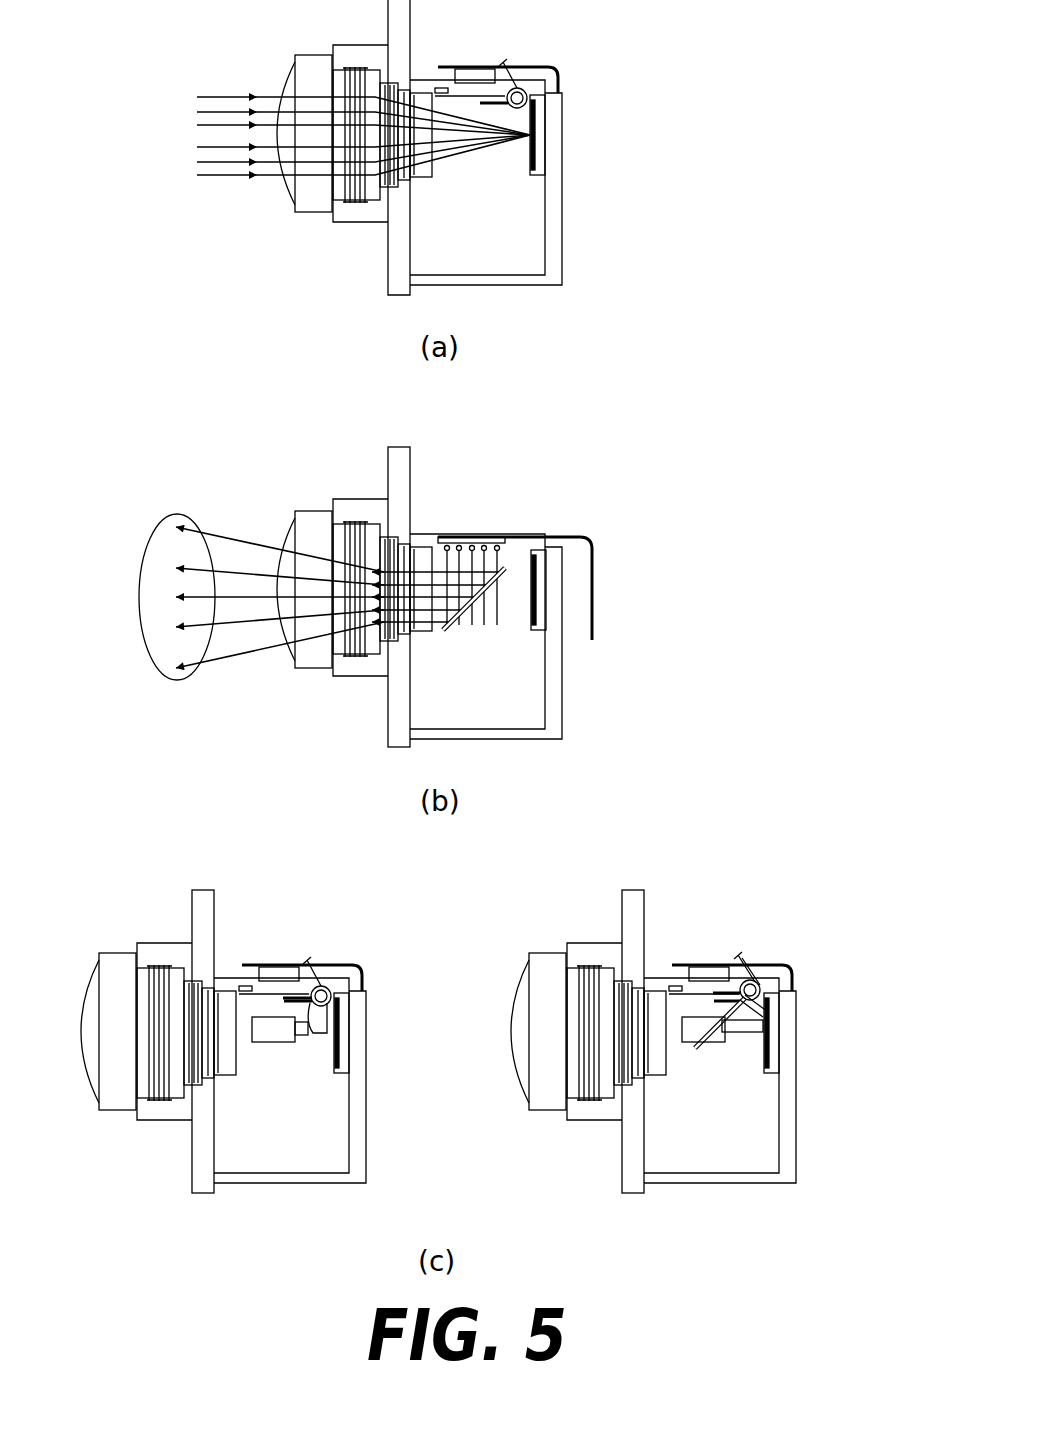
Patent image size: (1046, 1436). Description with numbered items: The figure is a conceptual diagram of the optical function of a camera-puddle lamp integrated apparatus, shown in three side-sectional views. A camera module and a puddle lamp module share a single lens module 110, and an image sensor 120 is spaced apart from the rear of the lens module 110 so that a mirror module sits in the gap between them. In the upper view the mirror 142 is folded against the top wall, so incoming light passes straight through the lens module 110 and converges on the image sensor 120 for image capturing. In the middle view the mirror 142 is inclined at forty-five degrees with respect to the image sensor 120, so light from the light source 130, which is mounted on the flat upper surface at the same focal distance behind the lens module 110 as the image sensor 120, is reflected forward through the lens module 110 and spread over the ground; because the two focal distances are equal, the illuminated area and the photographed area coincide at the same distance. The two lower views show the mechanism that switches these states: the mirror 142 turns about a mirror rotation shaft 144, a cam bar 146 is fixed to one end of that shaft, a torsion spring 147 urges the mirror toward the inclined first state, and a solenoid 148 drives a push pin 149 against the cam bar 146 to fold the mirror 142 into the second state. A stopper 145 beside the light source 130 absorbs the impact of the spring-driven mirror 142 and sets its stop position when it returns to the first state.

The lens module 110 is at (283, 182).
The image sensor 120 is at (540, 143).
The light source 130 is at (476, 70).
The mirror 142 is at (515, 85).
The mirror rotation shaft 144 is at (345, 978).
The stopper 145 is at (437, 88).
The cam bar 146 is at (327, 1023).
The torsion spring 147 is at (333, 967).
The solenoid 148 is at (280, 1037).
The push pin 149 is at (283, 1035).